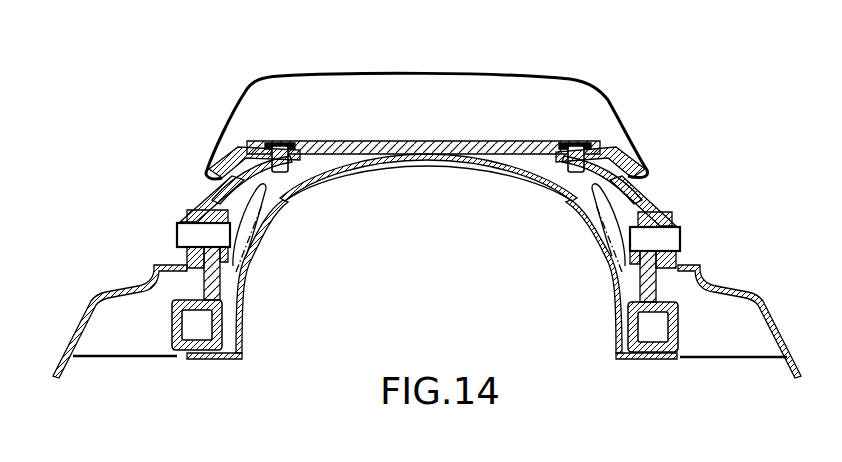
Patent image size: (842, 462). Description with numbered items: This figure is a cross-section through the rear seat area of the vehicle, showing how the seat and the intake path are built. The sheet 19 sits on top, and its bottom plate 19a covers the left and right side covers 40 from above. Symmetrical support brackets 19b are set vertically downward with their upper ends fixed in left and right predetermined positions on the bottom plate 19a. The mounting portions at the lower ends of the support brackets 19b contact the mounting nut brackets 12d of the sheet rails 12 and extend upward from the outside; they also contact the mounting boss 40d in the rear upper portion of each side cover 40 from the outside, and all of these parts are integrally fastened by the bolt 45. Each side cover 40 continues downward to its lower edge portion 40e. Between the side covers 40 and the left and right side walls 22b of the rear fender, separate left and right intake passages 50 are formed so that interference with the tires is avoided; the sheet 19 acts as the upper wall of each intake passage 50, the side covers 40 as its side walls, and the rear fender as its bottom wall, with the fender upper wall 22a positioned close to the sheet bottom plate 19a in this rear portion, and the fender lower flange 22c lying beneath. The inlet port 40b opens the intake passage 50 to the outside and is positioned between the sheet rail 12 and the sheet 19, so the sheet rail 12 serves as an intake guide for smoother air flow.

The sheet rail 12 is at (173, 325).
The mounting nut bracket 12d is at (193, 278).
The sheet 19 is at (414, 75).
The bottom plate 19a is at (443, 140).
The support bracket 19b is at (228, 178).
The upper wall 22a is at (426, 163).
The side wall 22b is at (264, 227).
The seat back cover lower flange 22c is at (207, 362).
The side cover 40 is at (97, 300).
The inlet port 40b is at (244, 232).
The mounting boss 40d is at (190, 210).
The side panel lower edge 40e is at (127, 358).
The bolt 45 is at (177, 239).
The intake passage 50 is at (258, 199).